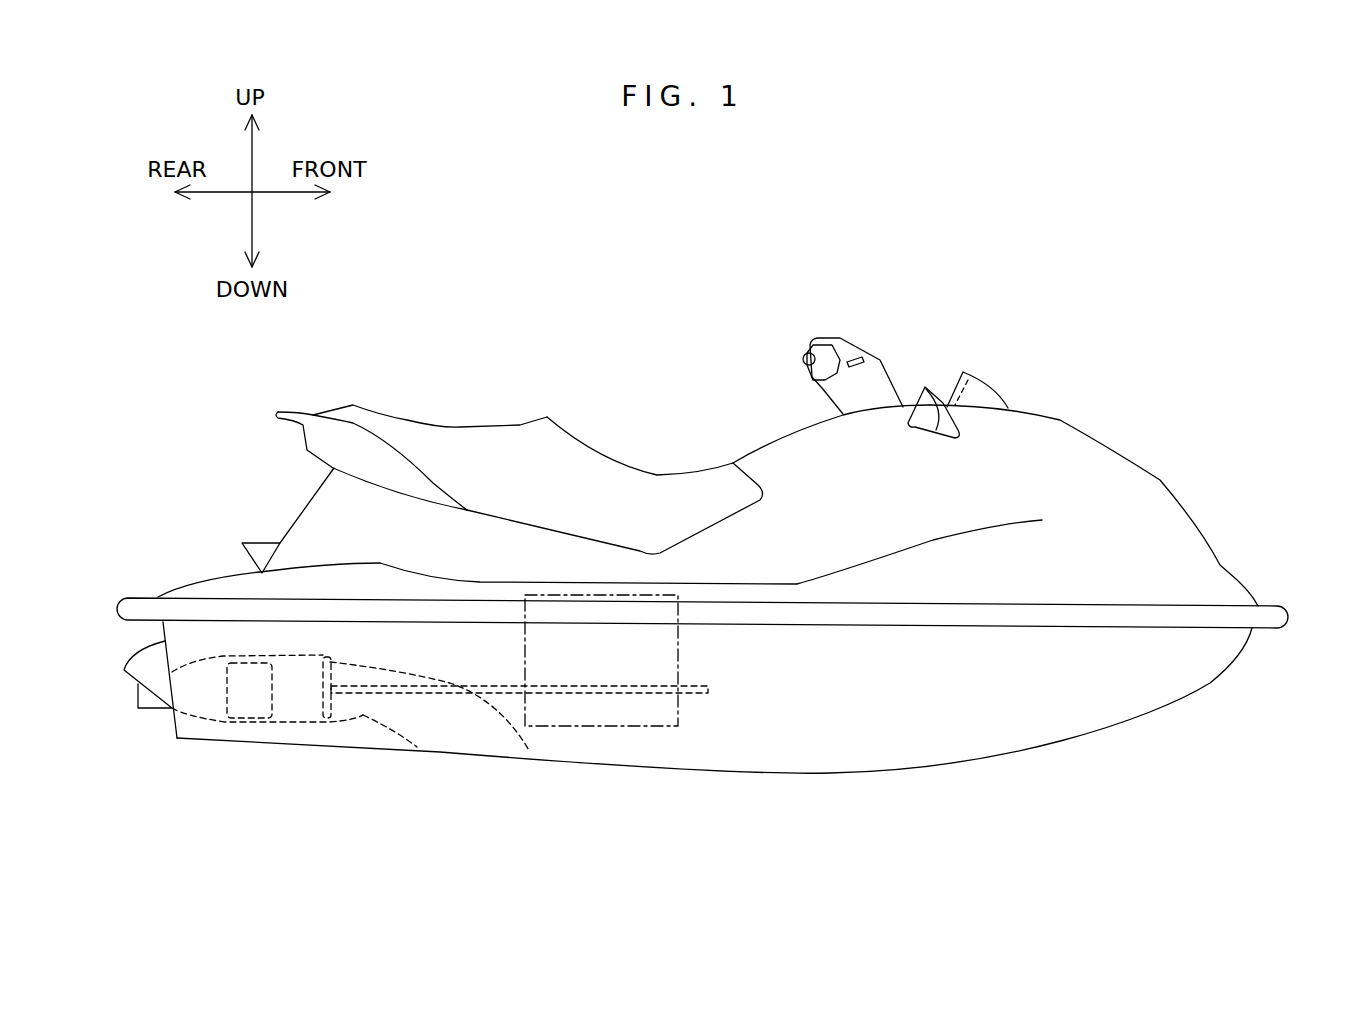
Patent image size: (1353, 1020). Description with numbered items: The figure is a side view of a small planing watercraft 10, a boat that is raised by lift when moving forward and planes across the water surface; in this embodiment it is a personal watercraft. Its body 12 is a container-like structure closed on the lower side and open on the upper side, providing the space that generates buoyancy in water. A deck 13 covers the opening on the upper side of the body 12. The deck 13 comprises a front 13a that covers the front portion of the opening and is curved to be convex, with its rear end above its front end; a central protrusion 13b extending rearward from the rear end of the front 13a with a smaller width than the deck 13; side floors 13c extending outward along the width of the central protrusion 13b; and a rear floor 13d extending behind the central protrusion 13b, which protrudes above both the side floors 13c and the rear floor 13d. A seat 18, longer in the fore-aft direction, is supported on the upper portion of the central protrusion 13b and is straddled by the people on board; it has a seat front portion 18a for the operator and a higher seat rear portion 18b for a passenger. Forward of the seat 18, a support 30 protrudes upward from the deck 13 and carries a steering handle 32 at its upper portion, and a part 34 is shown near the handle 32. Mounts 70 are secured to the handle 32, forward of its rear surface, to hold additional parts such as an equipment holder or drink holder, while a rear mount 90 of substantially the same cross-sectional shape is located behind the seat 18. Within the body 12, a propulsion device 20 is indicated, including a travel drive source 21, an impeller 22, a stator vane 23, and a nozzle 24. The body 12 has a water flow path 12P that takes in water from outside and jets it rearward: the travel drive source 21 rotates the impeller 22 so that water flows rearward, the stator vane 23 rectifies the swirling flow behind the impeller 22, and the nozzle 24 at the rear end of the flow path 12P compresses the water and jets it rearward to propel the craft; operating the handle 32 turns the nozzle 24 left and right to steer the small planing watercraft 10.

The small planing watercraft 10 is at (1048, 351).
The body 12 is at (1207, 683).
The water flow path 12P is at (383, 720).
The deck 13 is at (693, 501).
The front 13a is at (1162, 483).
The central protrusion 13b is at (752, 450).
The side floors 13c is at (760, 582).
The rear floor 13d is at (192, 580).
The seat 18 is at (519, 435).
The seat front portion 18a is at (518, 362).
The seat rear portion 18b is at (535, 417).
The propulsion device 20 is at (714, 649).
The travel drive source 21 is at (678, 715).
The impeller 22 is at (357, 663).
The stator vane 23 is at (252, 663).
The nozzle 24 is at (148, 712).
The support 30 is at (897, 385).
The handle 32 is at (858, 345).
The grip 34 is at (817, 340).
The mounts 70 is at (860, 358).
The rear mount 90 is at (243, 543).